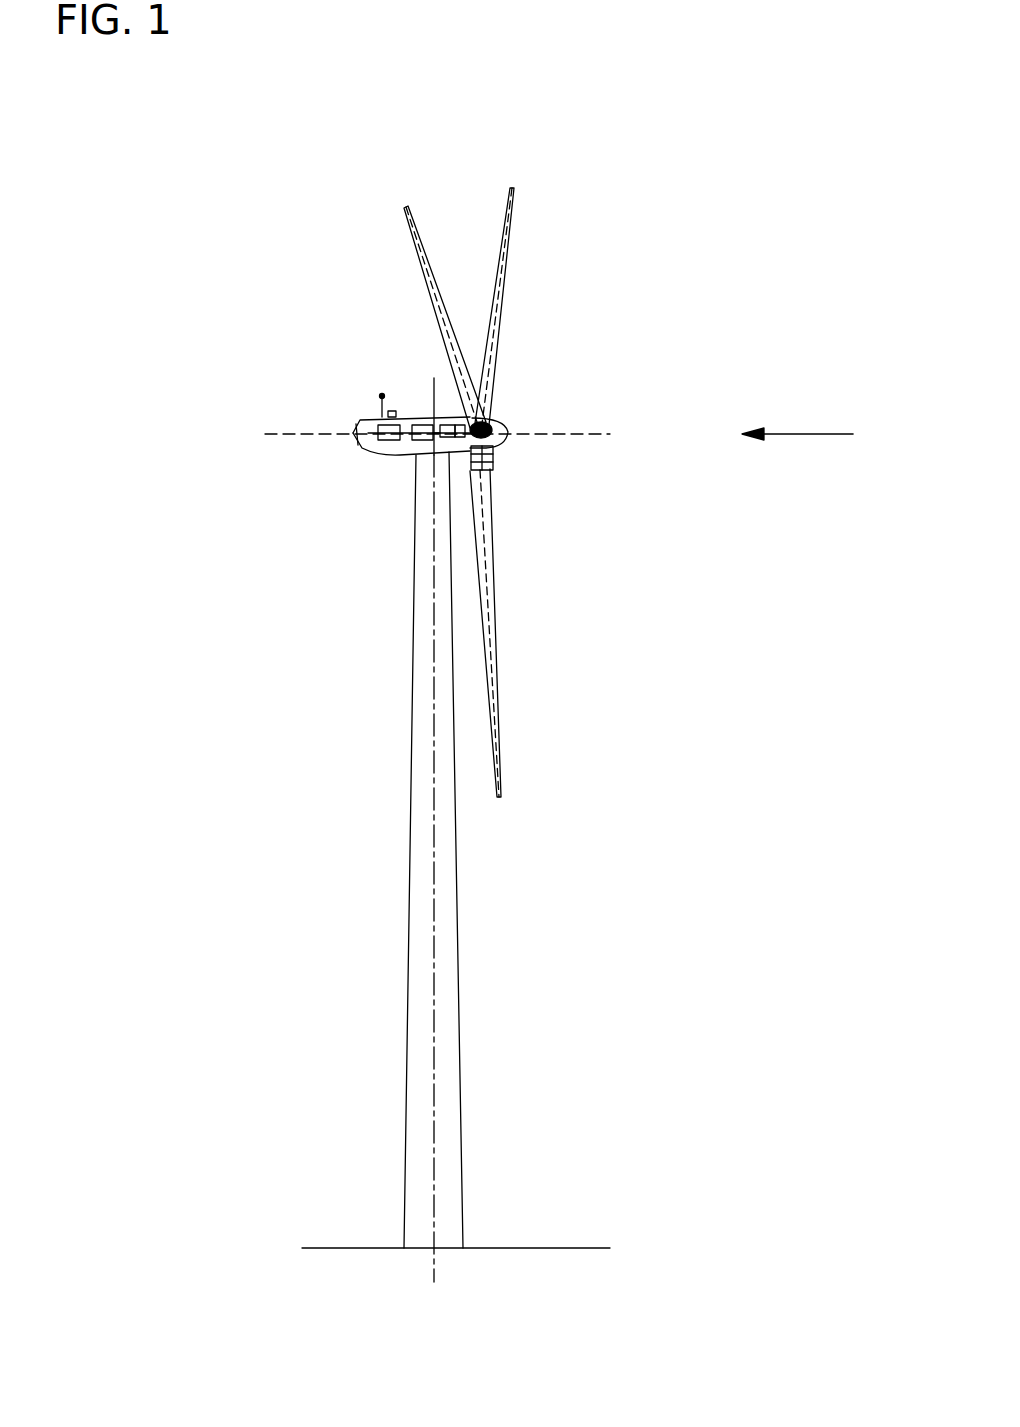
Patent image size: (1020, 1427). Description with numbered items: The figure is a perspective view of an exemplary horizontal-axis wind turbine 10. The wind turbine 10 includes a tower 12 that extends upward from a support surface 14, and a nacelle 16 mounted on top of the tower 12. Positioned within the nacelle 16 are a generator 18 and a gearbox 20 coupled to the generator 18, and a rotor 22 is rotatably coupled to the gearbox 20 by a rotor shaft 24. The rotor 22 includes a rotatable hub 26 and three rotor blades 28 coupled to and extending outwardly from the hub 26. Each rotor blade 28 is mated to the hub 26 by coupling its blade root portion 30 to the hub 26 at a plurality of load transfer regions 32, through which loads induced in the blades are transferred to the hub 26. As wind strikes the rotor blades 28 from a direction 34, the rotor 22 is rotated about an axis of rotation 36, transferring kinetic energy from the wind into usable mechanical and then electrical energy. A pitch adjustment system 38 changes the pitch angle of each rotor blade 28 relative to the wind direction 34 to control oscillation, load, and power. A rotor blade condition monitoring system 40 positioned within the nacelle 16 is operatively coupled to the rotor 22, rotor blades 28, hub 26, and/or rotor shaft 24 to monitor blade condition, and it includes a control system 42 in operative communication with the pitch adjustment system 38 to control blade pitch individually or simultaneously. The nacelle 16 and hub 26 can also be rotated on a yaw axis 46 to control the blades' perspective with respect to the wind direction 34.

The wind turbine 10 is at (702, 205).
The tower 12 is at (408, 1010).
The support surface 14 is at (361, 1248).
The nacelle 16 is at (386, 458).
The generator 18 is at (358, 420).
The gearbox 20 is at (418, 402).
The rotor 22 is at (528, 329).
The rotor shaft 24 is at (443, 425).
The rotatable hub 26 is at (505, 432).
The rotor blade 28 is at (428, 272).
The blade root portion 30 is at (495, 490).
The load transfer regions 32 is at (495, 462).
The direction 34 is at (818, 433).
The axis of rotation 36 is at (570, 437).
The pitch adjustment system 38 is at (493, 447).
The rotor blade condition monitoring system 40 is at (462, 428).
The control system 42 is at (452, 434).
The yaw axis 46 is at (436, 950).